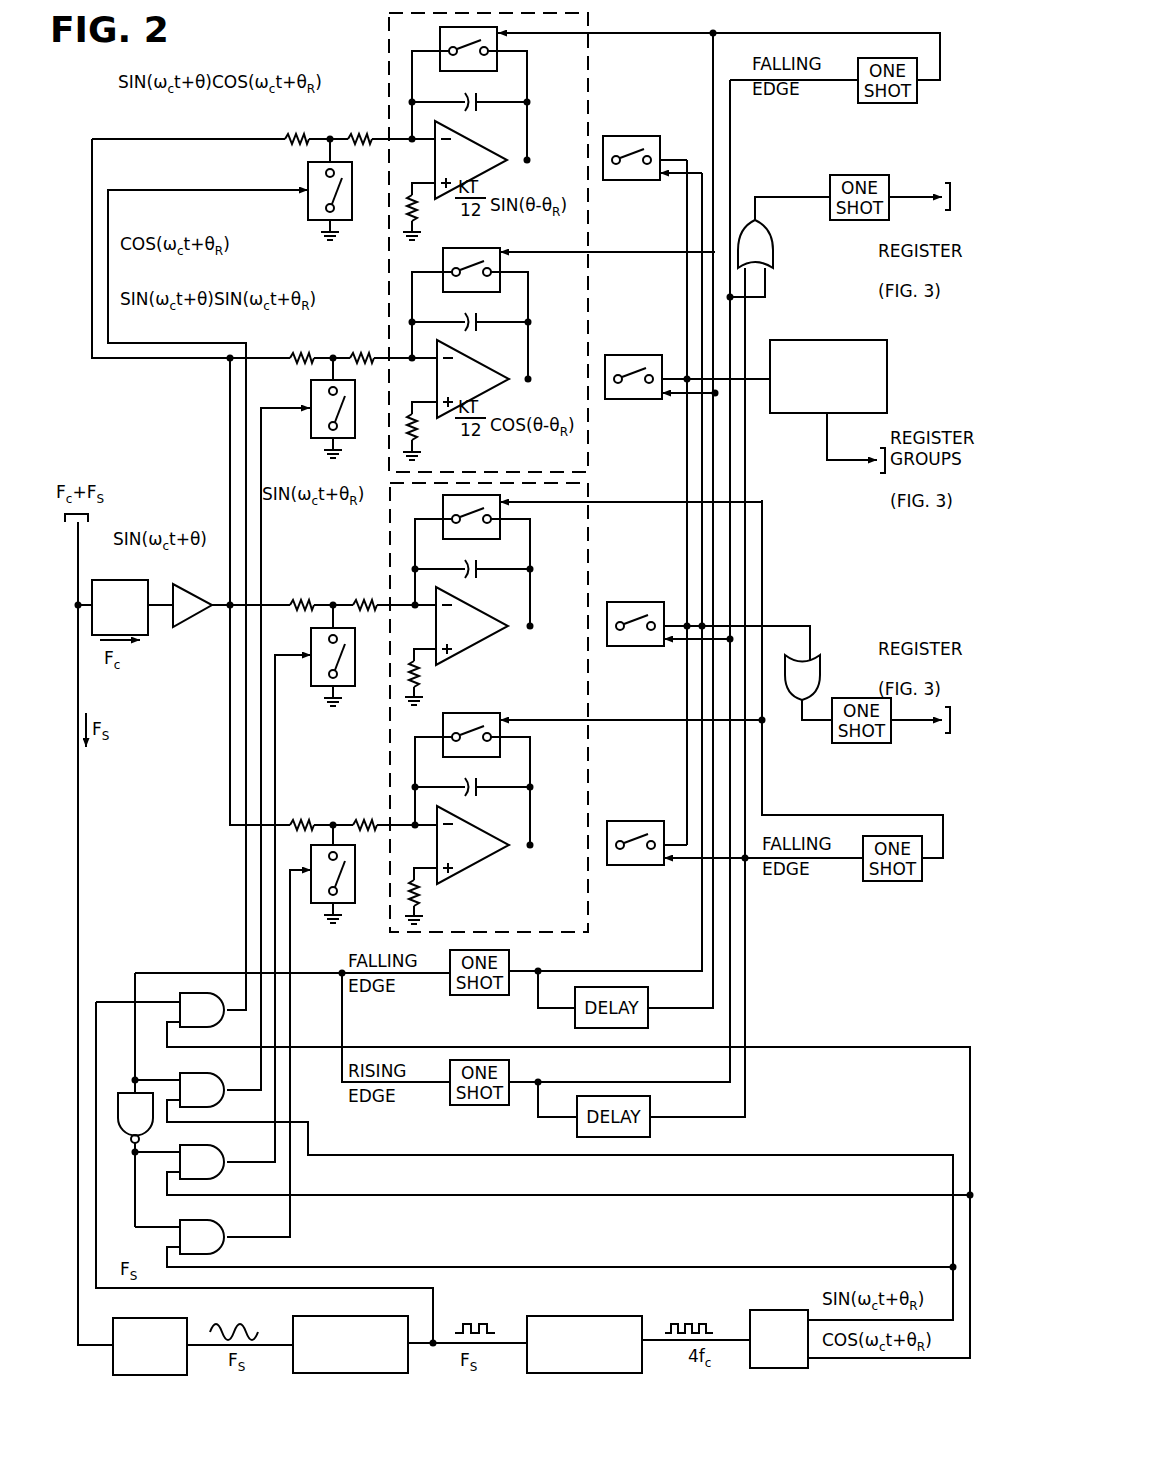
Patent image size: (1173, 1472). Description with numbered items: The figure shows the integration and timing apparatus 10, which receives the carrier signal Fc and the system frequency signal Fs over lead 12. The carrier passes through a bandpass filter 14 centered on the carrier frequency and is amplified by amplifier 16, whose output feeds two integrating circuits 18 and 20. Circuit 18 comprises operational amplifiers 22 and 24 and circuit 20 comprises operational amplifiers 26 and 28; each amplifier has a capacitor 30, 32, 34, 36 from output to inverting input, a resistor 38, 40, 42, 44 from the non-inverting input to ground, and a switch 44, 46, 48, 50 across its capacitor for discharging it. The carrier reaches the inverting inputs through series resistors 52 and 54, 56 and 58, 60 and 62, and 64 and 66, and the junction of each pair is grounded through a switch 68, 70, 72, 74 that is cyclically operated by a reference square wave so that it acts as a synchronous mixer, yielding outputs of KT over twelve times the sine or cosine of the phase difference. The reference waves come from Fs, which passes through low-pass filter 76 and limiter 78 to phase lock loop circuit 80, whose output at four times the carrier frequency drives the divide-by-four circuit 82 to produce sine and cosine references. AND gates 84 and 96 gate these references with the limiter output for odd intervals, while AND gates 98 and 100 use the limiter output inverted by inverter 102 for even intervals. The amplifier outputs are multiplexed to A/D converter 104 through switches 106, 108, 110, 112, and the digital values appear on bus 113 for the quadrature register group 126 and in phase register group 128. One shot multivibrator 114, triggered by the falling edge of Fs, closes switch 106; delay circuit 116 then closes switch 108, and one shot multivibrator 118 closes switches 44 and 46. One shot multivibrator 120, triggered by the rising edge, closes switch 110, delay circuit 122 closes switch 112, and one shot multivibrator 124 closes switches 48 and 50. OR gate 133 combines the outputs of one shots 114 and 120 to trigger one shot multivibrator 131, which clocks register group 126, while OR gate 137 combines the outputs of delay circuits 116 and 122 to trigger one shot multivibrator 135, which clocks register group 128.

The apparatus 10 is at (880, 1007).
The lead 12 is at (86, 556).
The bandpass filter 14 is at (140, 636).
The amplifier 16 is at (186, 622).
The integrating circuit 18 is at (389, 26).
The integrating circuit 20 is at (390, 548).
The operational amplifier 22 is at (473, 146).
The operational amplifier 24 is at (473, 367).
The operational amplifier 26 is at (473, 614).
The operational amplifier 28 is at (473, 833).
The capacitor 30 is at (478, 99).
The capacitor 32 is at (478, 319).
The capacitor 34 is at (478, 566).
The capacitor 36 is at (478, 786).
The resistor 38 is at (412, 216).
The resistor 40 is at (412, 435).
The resistor 42 is at (414, 672).
The switch 44 is at (440, 38).
The switch 46 is at (443, 262).
The switch 48 is at (443, 510).
The switch 50 is at (443, 730).
The resistor 52 is at (290, 139).
The resistor 54 is at (362, 139).
The resistor 56 is at (292, 358).
The resistor 58 is at (362, 358).
The resistor 60 is at (302, 605).
The resistor 62 is at (362, 605).
The resistor 64 is at (302, 825).
The resistor 66 is at (362, 825).
The switch 68 is at (308, 180).
The switch 70 is at (311, 400).
The switch 72 is at (311, 648).
The switch 74 is at (311, 862).
The low-pass filter 76 is at (186, 1320).
The limiter 78 is at (293, 1318).
The phase lock loop circuit 80 is at (574, 1316).
The divide by 4 circuit 82 is at (770, 1310).
The AND gate 84 is at (180, 1000).
The AND gate 96 is at (180, 1080).
The AND gate 98 is at (180, 1152).
The AND gate 100 is at (180, 1227).
The inverter 102 is at (126, 1093).
The A/D converter 104 is at (822, 340).
The switch 106 is at (628, 136).
The switch 108 is at (628, 355).
The switch 110 is at (628, 602).
The switch 112 is at (628, 821).
The bus 113 is at (827, 456).
The one shot multivibrator 114 is at (510, 963).
The delay circuit 116 is at (648, 1000).
The one shot multivibrator 118 is at (875, 103).
The one shot multivibrator 120 is at (510, 1073).
The delay circuit 122 is at (650, 1110).
The one shot multivibrator 124 is at (898, 881).
The register group 126 is at (954, 714).
The register group 128 is at (954, 246).
The one shot multivibrator 131 is at (860, 743).
The OR gate 133 is at (815, 662).
The one shot multivibrator 135 is at (848, 175).
The OR gate 137 is at (773, 250).